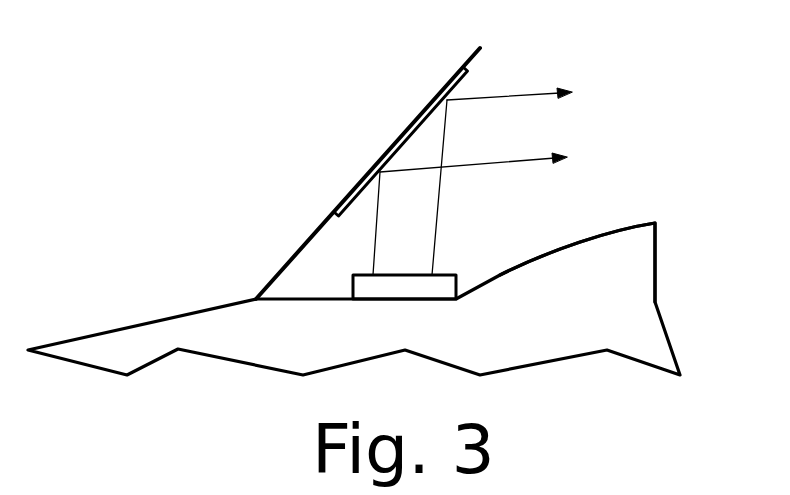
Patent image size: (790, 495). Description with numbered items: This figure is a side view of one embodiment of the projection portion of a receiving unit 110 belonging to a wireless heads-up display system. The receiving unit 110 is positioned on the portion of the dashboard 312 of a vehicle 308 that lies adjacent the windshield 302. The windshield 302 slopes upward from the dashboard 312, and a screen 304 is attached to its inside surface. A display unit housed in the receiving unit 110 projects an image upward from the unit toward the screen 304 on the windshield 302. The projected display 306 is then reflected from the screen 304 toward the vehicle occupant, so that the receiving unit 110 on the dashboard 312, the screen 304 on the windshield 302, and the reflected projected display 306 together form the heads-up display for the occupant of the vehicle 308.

The receiving unit 110 is at (353, 288).
The windshield 302 is at (322, 222).
The screen 304 is at (398, 136).
The projected display 306 is at (512, 95).
The vehicle 308 is at (113, 330).
The dashboard 312 is at (583, 238).